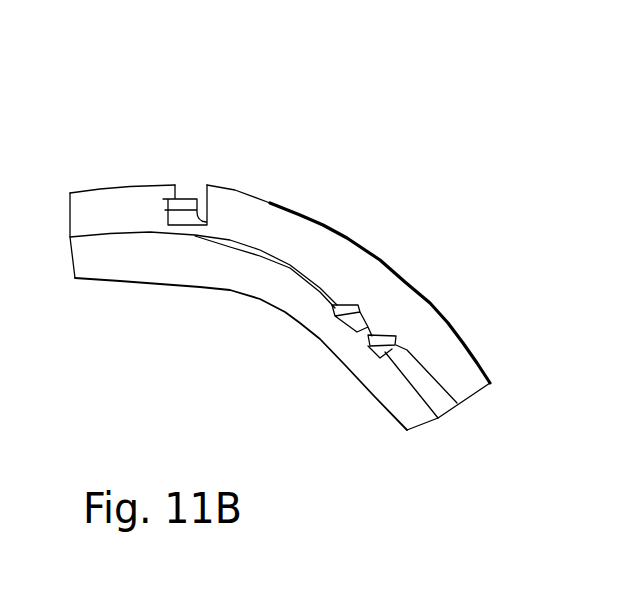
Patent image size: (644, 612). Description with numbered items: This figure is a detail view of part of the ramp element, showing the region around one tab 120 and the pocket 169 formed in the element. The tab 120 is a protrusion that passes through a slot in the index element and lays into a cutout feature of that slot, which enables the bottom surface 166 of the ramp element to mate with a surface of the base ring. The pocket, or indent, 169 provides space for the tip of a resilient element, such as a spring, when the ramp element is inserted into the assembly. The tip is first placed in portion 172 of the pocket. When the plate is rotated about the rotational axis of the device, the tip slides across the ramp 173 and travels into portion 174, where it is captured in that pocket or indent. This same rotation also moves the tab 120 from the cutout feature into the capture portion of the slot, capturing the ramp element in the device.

The tab 120 is at (188, 198).
The bottom surface 166 is at (393, 387).
The pocket 169 is at (393, 268).
The portion of the pocket 172 is at (368, 315).
The ramp 173 is at (383, 330).
The portion of the pocket 174 is at (405, 340).